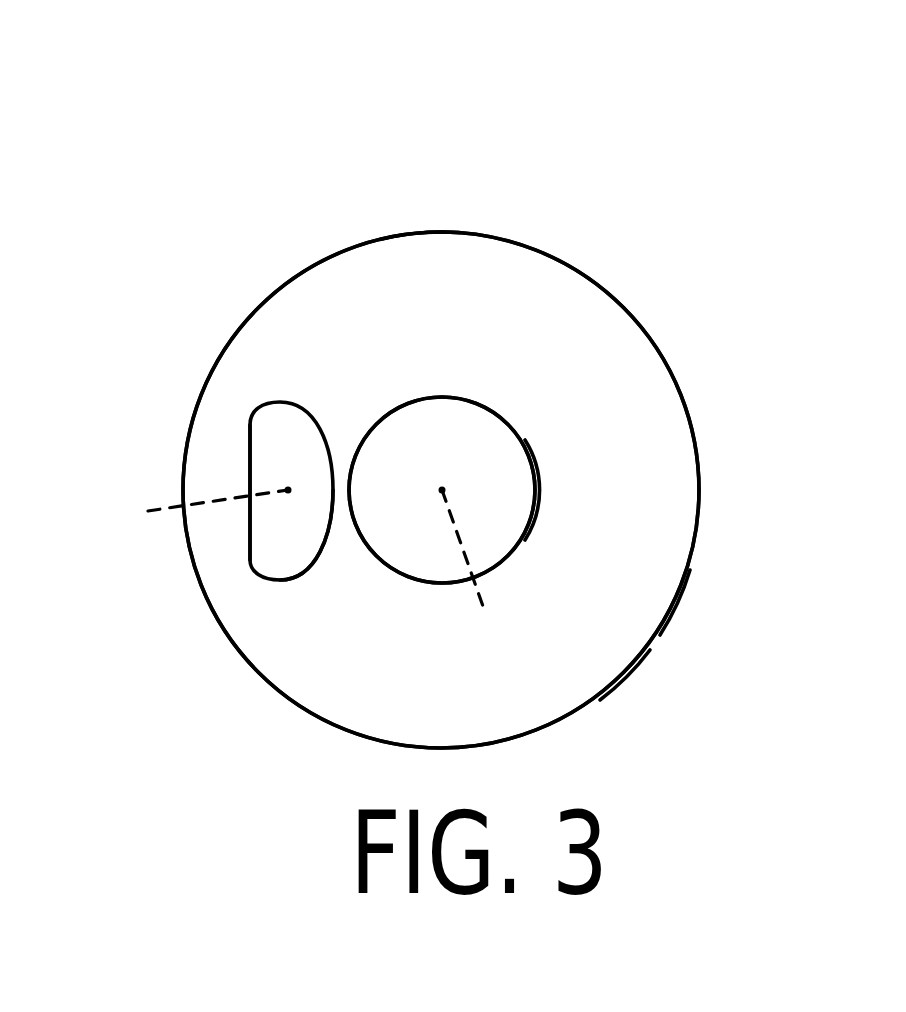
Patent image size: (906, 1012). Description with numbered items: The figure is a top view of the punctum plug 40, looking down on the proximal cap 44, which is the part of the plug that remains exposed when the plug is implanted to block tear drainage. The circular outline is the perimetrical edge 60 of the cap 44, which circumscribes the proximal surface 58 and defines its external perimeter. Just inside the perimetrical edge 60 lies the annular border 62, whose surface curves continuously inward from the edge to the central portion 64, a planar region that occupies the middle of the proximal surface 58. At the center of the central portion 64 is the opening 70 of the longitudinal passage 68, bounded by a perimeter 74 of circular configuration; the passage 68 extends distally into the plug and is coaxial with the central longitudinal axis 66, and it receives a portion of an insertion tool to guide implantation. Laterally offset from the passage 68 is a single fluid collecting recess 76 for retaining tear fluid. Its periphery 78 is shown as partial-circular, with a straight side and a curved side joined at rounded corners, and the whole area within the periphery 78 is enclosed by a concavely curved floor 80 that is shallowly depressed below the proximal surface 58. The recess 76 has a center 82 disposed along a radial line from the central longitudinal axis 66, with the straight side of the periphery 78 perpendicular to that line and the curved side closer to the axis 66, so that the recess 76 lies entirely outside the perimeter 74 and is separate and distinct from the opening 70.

The punctum plug 40 is at (128, 160).
The proximal cap 44 is at (630, 268).
The proximal surface 58 is at (655, 507).
The perimetrical edge 60 is at (678, 600).
The annular border 62 is at (622, 657).
The central portion 64 is at (422, 285).
The perimeter 74 is at (390, 413).
The longitudinal passage 68 is at (378, 540).
The opening 70 is at (497, 470).
The central longitudinal axis 66 is at (474, 594).
The periphery 78 is at (273, 402).
The floor 80 is at (267, 442).
The center 82 is at (193, 513).
The fluid collecting recess 76 is at (243, 538).